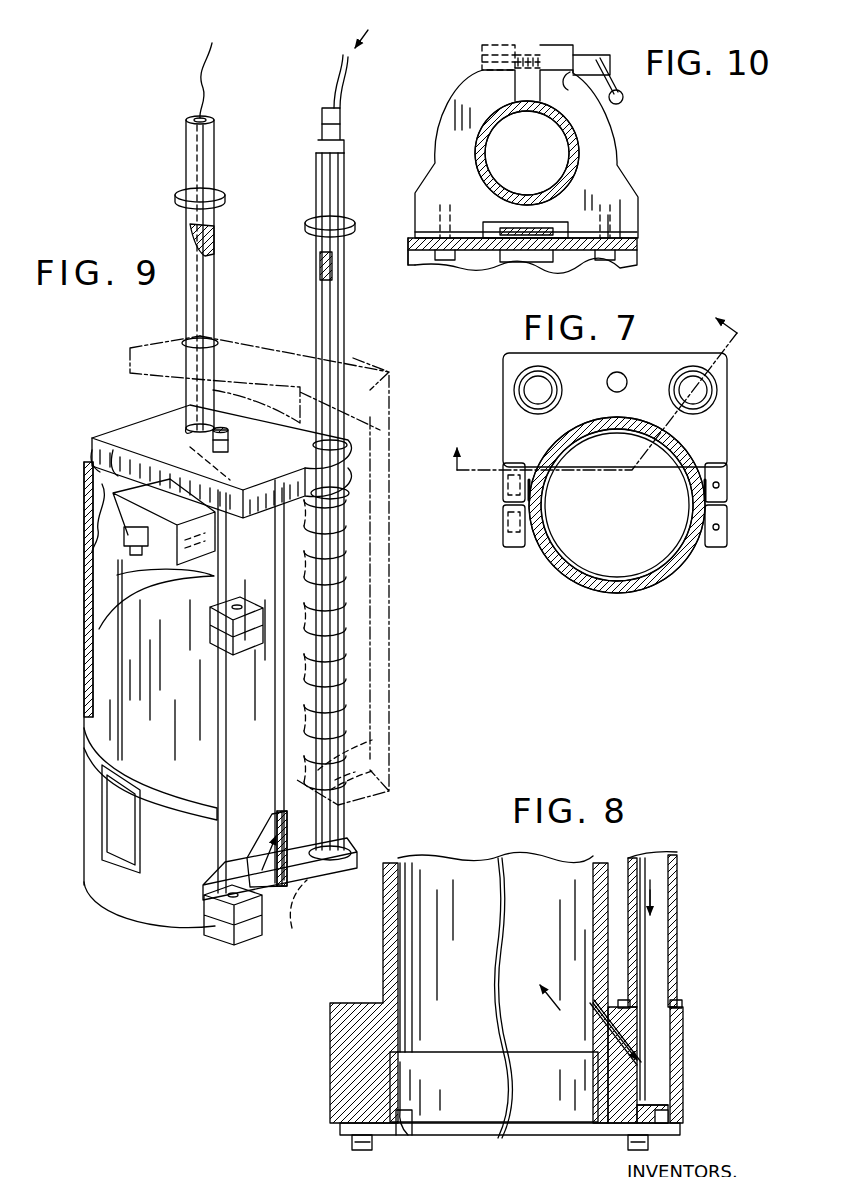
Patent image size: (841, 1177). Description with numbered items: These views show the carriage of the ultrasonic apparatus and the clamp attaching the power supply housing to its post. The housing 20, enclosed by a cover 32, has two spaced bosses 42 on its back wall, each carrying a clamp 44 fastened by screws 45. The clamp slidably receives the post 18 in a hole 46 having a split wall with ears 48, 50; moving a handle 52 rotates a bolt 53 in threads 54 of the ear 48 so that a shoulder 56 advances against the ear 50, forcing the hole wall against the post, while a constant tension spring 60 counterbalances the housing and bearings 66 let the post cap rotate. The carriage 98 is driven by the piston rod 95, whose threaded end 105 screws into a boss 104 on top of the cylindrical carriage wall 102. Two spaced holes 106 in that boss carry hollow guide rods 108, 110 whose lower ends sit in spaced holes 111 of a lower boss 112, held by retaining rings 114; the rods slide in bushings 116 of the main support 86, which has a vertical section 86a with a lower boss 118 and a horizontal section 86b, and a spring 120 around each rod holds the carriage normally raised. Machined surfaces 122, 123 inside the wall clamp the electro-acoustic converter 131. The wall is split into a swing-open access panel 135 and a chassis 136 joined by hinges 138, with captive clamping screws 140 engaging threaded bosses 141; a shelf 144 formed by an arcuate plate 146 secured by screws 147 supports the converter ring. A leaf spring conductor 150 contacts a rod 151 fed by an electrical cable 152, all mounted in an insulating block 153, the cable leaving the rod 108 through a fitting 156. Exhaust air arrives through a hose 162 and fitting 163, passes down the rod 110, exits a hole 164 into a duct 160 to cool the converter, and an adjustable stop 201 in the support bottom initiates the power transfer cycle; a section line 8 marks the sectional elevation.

In FIG. 7, the section line 8— 8 is at (592, 381).
In FIG. 10, the post 18 is at (477, 170).
In FIG. 10, the housing 20 is at (640, 257).
In FIG. 10, the cover 32 is at (408, 250).
In FIG. 10, the bosses 42 is at (638, 218).
In FIG. 10, the clamp 44 is at (616, 182).
In FIG. 10, the screws 45 is at (438, 203).
In FIG. 10, the hole 46 is at (498, 118).
In FIG. 10, the ear 48 is at (504, 46).
In FIG. 10, the ear 50 is at (565, 46).
In FIG. 10, the handle 52 is at (623, 102).
In FIG. 10, the bolt 53 is at (612, 66).
In FIG. 10, the threads 54 is at (485, 72).
In FIG. 10, the shoulder 56 is at (582, 92).
In FIG. 10, the constant tension spring 60 is at (505, 229).
In FIG. 8, the bearings 66 is at (652, 1112).
In FIG. 9, the main support 86 is at (391, 382).
In FIG. 9, the vertical section 86a is at (390, 694).
In FIG. 9, the horizontal section 86b is at (152, 352).
In FIG. 9, the piston rod 95 is at (224, 433).
In FIG. 9, the carriage 98 is at (72, 655).
In FIG. 7, the carriage 98 is at (564, 592).
In FIG. 9, the carriage wall 102 is at (343, 820).
In FIG. 7, the carriage wall 102 is at (545, 440).
In FIG. 8, the carriage wall 102 is at (517, 995).
In FIG. 9, the boss 104 is at (128, 432).
In FIG. 9, the threaded end 105 is at (230, 458).
In FIG. 9, the spaced holes 106 is at (186, 424).
In FIG. 9, the guide rod 108 is at (190, 240).
In FIG. 7, the guide rod 108 is at (550, 386).
In FIG. 9, the guide rod 110 is at (316, 280).
In FIG. 7, the guide rod 110 is at (717, 390).
In FIG. 8, the guide rod 110 is at (671, 944).
In FIG. 9, the spaced holes 111 is at (302, 900).
In FIG. 7, the spaced holes 111 is at (530, 390).
In FIG. 8, the spaced holes 111 is at (658, 1040).
In FIG. 9, the lower boss 112 is at (326, 890).
In FIG. 7, the lower boss 112 is at (712, 374).
In FIG. 8, the lower boss 112 is at (684, 1064).
In FIG. 9, the retaining rings 114 is at (354, 492).
In FIG. 7, the retaining rings 114 is at (526, 362).
In FIG. 8, the retaining rings 114 is at (684, 1010).
In FIG. 9, the bushings 116 is at (216, 345).
In FIG. 9, the lower boss 118 is at (375, 770).
In FIG. 9, the spring 120 is at (352, 547).
In FIG. 9, the machined surface 122 is at (181, 603).
In FIG. 9, the machined surface 123 is at (255, 868).
In FIG. 8, the machined surface 123 is at (494, 1087).
In FIG. 7, the electro-acoustic converter 131 is at (686, 568).
In FIG. 9, the access panel 135 is at (136, 905).
In FIG. 7, the access panel 135 is at (624, 592).
In FIG. 9, the chassis 136 is at (236, 727).
In FIG. 7, the chassis 136 is at (690, 458).
In FIG. 8, the chassis 136 is at (384, 963).
In FIG. 9, the hinges 138 is at (240, 614).
In FIG. 7, the hinges 138 is at (720, 528).
In FIG. 7, the captive clamping screws 140 is at (514, 548).
In FIG. 7, the threaded bosses 141 is at (504, 488).
In FIG. 7, the shelf 144 is at (542, 488).
In FIG. 8, the shelf 144 is at (405, 1118).
In FIG. 7, the arcuate shaped plate 146 is at (680, 456).
In FIG. 8, the arcuate shaped plate 146 is at (383, 1132).
In FIG. 8, the screws 147 is at (360, 1150).
In FIG. 9, the leaf spring conductor 150 is at (148, 543).
In FIG. 9, the rod 151 is at (140, 528).
In FIG. 9, the electrical cable 152 is at (200, 90).
In FIG. 9, the block 153 is at (112, 520).
In FIG. 9, the fitting 156 is at (196, 120).
In FIG. 9, the duct 160 is at (303, 917).
In FIG. 8, the duct 160 is at (633, 1040).
In FIG. 9, the hose 162 is at (349, 76).
In FIG. 9, the fitting 163 is at (341, 126).
In FIG. 8, the hole 164 is at (642, 1066).
In FIG. 7, the adjustable stop 201 is at (622, 373).